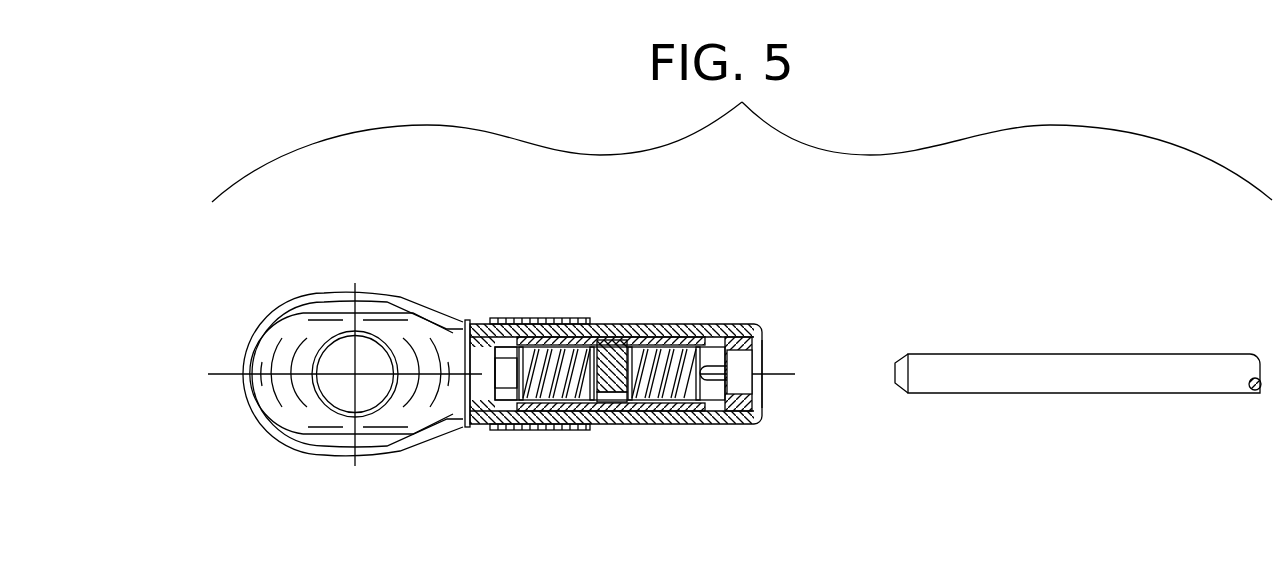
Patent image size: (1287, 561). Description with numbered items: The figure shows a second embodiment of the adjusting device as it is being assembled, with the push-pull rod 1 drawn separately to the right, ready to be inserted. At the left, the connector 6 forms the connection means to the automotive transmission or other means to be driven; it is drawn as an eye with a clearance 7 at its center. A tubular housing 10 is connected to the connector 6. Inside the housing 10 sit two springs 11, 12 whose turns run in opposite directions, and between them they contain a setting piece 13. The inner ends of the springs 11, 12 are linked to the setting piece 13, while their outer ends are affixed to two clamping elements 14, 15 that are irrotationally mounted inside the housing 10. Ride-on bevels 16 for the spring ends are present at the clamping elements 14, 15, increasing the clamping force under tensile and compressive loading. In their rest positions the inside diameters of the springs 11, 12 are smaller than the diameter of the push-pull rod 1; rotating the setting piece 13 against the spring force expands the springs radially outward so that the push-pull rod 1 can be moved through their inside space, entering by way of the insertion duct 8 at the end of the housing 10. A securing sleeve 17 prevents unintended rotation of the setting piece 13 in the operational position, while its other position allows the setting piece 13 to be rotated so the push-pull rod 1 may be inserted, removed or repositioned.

The push-pull rod 1 is at (1082, 358).
The connector 6 is at (318, 312).
The clearance 7 is at (357, 375).
The insertion duct 8 is at (764, 382).
The housing 10 is at (696, 328).
The spring 11 is at (738, 330).
The spring 12 is at (550, 318).
The setting piece 13 is at (617, 330).
The clamping element 14 is at (755, 330).
The clamping element 15 is at (487, 322).
The ride-on bevel 16 is at (510, 432).
The securing sleeve 17 is at (577, 318).